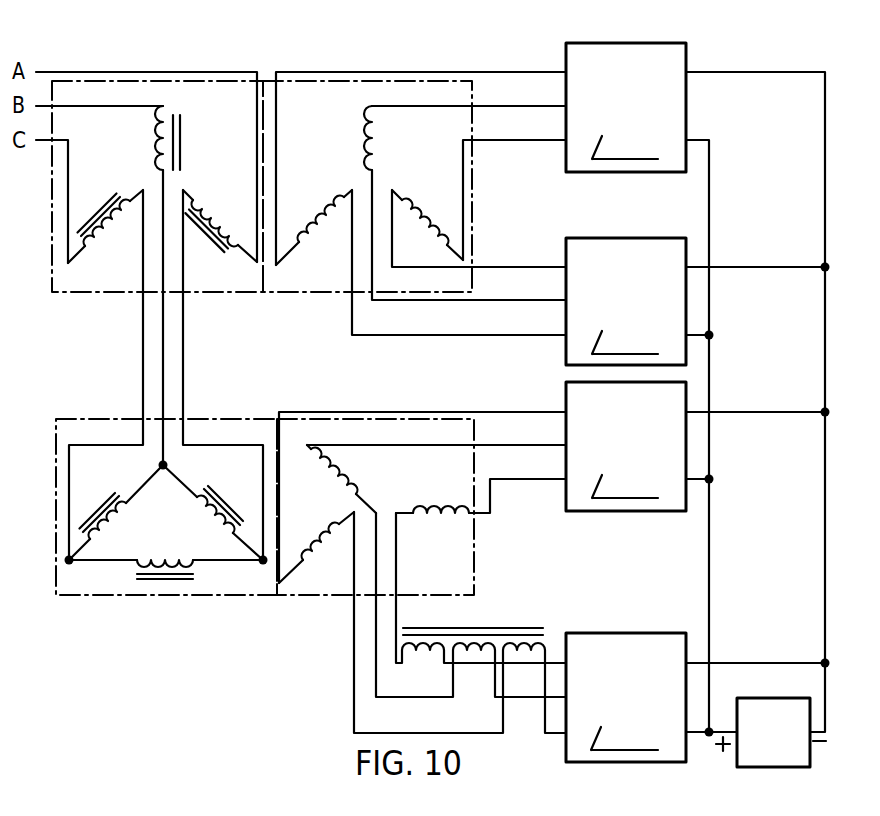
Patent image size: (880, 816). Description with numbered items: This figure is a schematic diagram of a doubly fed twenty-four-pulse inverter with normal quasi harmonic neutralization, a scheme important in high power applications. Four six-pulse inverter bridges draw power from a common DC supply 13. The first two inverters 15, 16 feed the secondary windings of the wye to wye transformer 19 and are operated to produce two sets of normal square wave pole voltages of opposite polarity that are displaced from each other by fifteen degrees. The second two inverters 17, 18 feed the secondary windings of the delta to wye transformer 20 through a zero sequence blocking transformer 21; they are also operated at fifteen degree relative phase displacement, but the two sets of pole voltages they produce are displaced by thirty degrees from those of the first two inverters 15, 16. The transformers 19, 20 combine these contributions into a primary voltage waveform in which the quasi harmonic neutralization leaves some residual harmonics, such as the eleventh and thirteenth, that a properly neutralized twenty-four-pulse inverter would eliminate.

The DC supply 13 is at (776, 698).
The first inverter 15 is at (566, 49).
The second inverter 16 is at (590, 238).
The third inverter 17 is at (566, 385).
The fourth inverter 18 is at (620, 633).
The wye to wye transformer 19 is at (210, 81).
The delta to wye transformer 20 is at (243, 419).
The zero sequence blocking transformer 21 is at (478, 628).